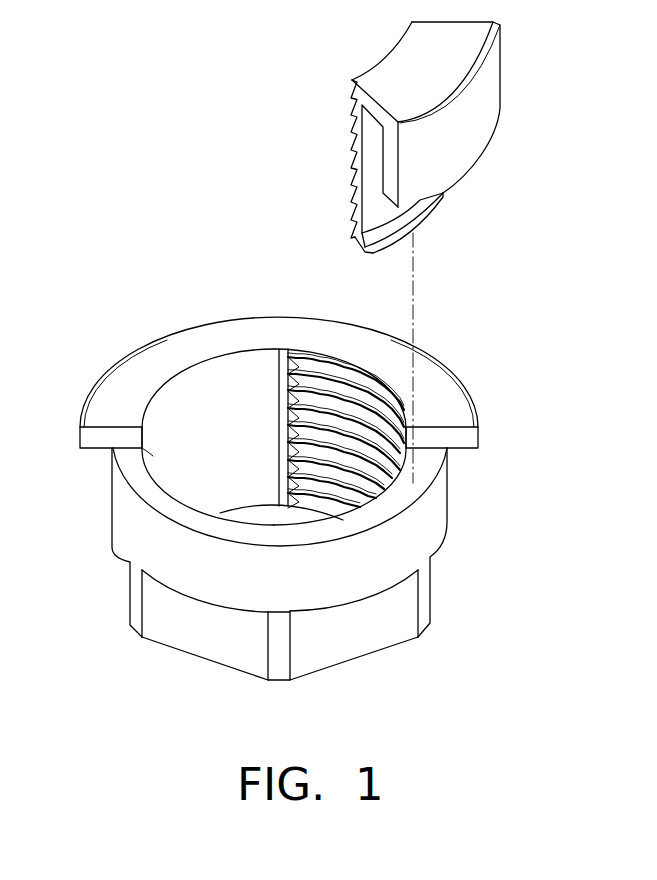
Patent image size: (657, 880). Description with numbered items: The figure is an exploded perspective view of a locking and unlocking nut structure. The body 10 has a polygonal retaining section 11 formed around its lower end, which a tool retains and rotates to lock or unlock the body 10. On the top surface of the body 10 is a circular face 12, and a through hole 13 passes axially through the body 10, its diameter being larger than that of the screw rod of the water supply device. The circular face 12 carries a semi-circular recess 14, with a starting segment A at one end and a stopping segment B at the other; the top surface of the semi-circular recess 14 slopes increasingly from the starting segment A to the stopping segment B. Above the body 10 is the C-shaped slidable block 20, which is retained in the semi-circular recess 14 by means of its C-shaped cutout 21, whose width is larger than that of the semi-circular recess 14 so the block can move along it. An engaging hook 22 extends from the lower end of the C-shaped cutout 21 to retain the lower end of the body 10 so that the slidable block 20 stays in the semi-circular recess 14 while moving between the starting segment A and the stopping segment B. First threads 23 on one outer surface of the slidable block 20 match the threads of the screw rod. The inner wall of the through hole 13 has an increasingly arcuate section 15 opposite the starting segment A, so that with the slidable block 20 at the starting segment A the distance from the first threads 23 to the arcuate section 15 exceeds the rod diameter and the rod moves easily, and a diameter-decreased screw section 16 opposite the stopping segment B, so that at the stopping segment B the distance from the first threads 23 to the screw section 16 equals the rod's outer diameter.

The body 10 is at (433, 563).
The polygonal retaining section 11 is at (157, 612).
The circular face 12 is at (457, 410).
The through hole 13 is at (265, 514).
The semi-circular recess 14 is at (376, 540).
The arcuate section 15 is at (188, 391).
The diameter-decreased screw section 16 is at (327, 368).
The slidable block 20 is at (500, 80).
The C-shaped cutout 21 is at (375, 202).
The engaging hook 22 is at (423, 210).
The first threads 23 is at (352, 112).
The starting segment A is at (437, 457).
The stopping segment B is at (120, 465).